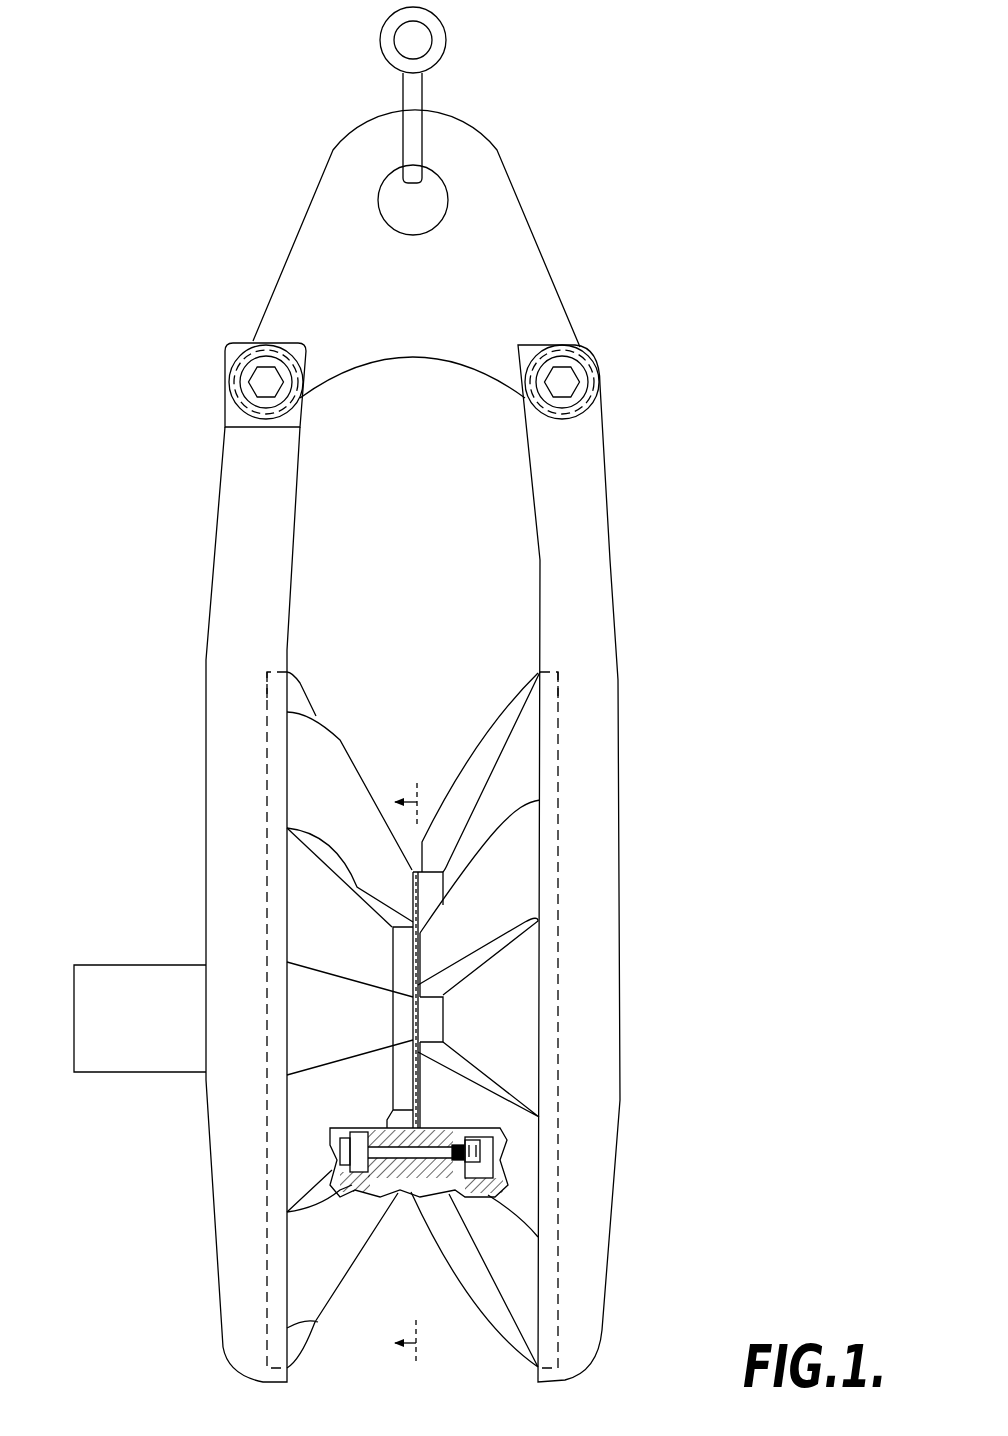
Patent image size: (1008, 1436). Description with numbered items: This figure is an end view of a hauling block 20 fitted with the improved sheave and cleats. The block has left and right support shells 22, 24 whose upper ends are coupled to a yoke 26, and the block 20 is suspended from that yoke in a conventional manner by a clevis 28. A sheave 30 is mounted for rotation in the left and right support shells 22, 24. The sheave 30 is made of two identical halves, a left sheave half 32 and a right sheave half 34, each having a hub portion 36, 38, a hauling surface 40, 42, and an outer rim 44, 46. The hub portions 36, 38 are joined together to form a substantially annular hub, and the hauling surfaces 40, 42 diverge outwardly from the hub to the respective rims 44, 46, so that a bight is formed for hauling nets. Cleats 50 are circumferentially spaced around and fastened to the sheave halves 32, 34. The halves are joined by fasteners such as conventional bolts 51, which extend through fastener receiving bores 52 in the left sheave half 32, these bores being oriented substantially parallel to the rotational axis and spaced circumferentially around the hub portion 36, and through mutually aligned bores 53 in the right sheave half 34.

The hauling block 20 is at (165, 620).
The left support shell 22 is at (248, 515).
The right support shell 24 is at (582, 515).
The yoke 26 is at (505, 210).
The clevis 28 is at (415, 88).
The sheave 30 is at (440, 712).
The left sheave half 32 is at (317, 1107).
The right sheave half 34 is at (513, 1035).
The hub portion 36 is at (400, 950).
The hub portion 38 is at (433, 1022).
The hauling surface 40 is at (345, 862).
The hauling surface 42 is at (477, 805).
The outer rim 44 is at (287, 688).
The outer rim 46 is at (550, 690).
The cleats 50 is at (320, 798).
The bolts 51 is at (420, 1195).
The fastener receiving bores 52 is at (333, 1125).
The bores 53 is at (440, 1192).